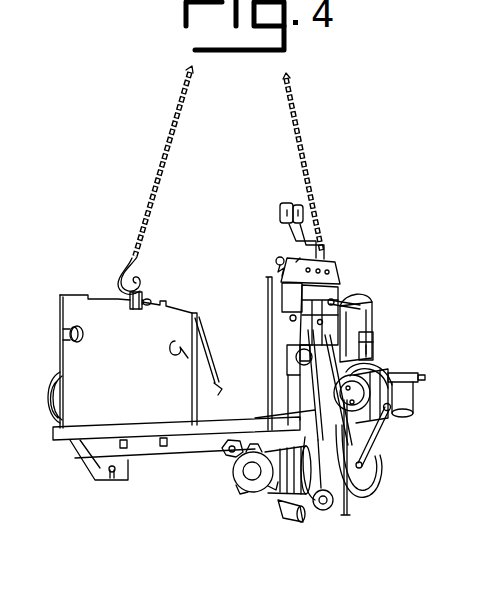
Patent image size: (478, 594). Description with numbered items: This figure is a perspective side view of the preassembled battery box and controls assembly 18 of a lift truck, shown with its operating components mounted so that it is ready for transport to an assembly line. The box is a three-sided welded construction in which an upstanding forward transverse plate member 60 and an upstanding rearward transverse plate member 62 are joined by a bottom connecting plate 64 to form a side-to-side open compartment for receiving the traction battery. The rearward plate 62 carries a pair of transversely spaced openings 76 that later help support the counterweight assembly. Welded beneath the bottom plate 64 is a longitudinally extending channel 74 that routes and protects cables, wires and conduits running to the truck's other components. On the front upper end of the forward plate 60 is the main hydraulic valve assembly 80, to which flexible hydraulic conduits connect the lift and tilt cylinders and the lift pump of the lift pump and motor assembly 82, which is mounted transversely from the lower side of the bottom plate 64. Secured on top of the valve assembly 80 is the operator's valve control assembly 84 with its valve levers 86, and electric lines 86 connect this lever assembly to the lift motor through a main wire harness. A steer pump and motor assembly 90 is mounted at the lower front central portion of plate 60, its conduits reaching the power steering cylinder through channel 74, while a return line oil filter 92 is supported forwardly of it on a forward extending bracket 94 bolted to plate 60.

The battery box and controls assembly 18 is at (158, 470).
The forward transverse plate member 60 is at (357, 330).
The rearward transverse plate member 62 is at (133, 343).
The bottom connecting plate 64 is at (175, 427).
The channel 74 is at (117, 447).
The transversely spaced openings 76 is at (66, 332).
The main hydraulic valve assembly 80 is at (337, 297).
The lift pump and motor assembly 82 is at (243, 473).
The operator's valve control assembly 84 is at (331, 268).
The valve levers / electric lines 86 is at (296, 203).
The steer pump and motor assembly 90 is at (398, 371).
The return line oil filter 92 is at (412, 402).
The bracket 94 is at (383, 383).